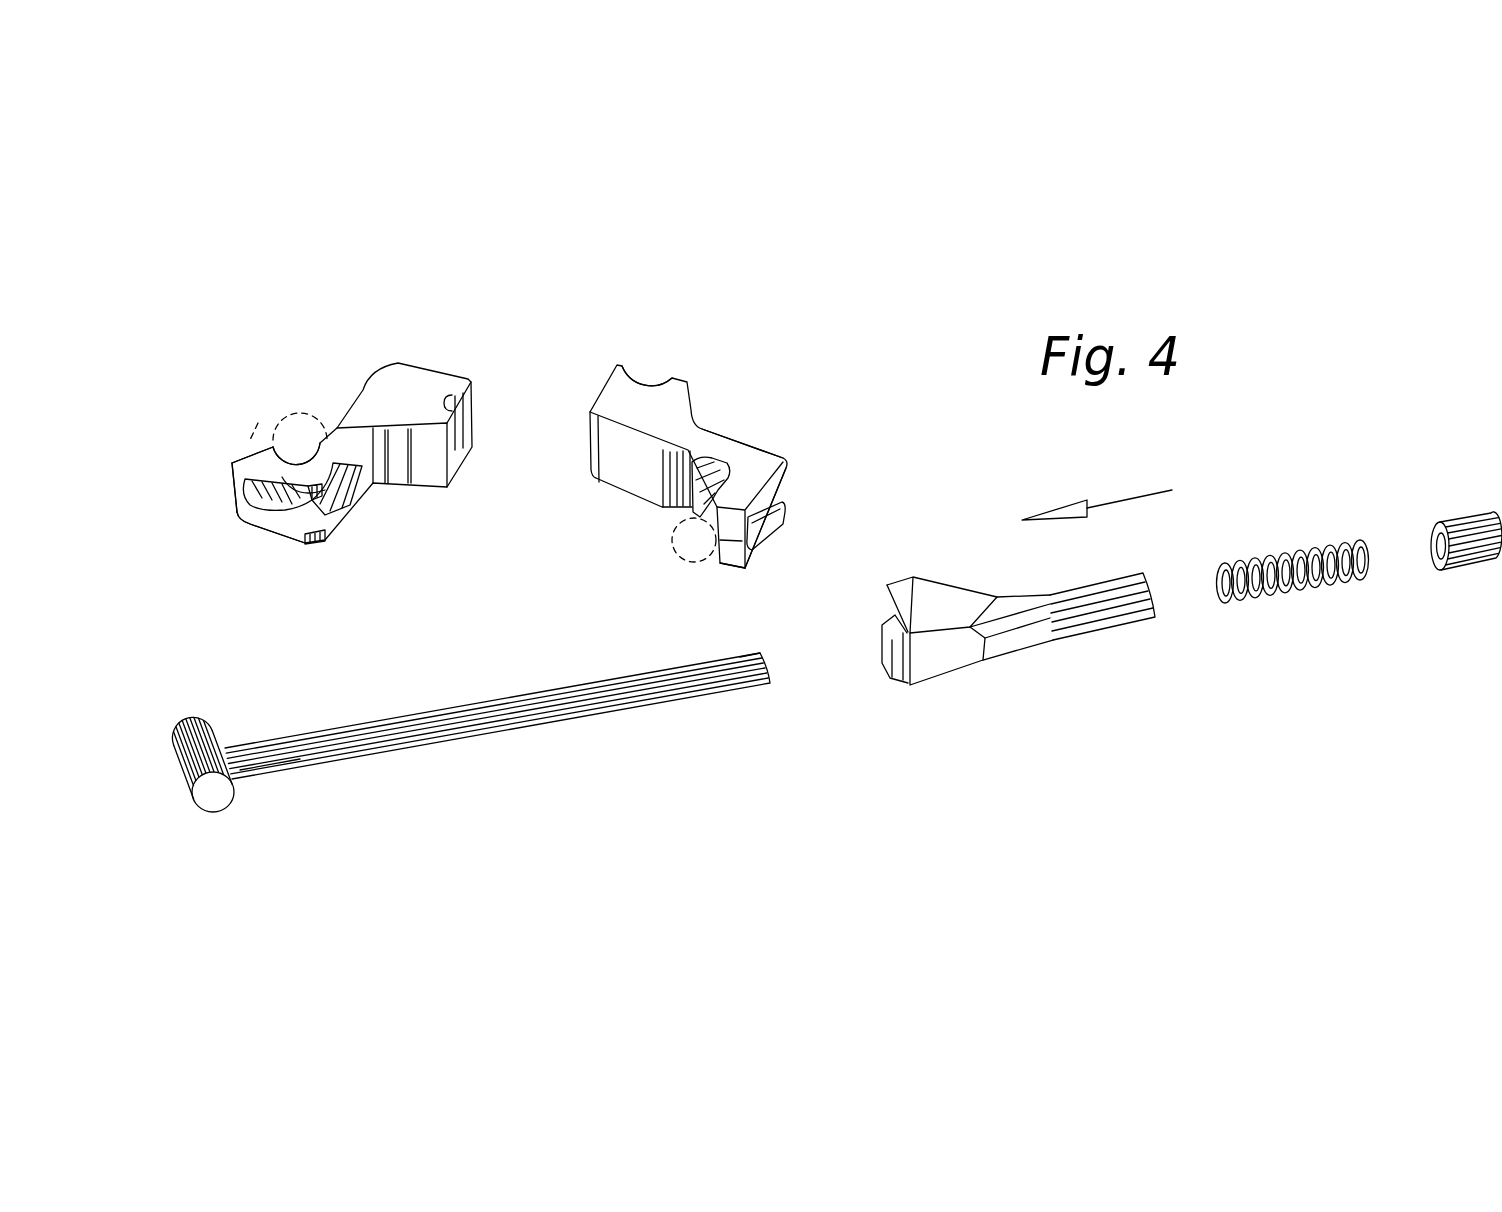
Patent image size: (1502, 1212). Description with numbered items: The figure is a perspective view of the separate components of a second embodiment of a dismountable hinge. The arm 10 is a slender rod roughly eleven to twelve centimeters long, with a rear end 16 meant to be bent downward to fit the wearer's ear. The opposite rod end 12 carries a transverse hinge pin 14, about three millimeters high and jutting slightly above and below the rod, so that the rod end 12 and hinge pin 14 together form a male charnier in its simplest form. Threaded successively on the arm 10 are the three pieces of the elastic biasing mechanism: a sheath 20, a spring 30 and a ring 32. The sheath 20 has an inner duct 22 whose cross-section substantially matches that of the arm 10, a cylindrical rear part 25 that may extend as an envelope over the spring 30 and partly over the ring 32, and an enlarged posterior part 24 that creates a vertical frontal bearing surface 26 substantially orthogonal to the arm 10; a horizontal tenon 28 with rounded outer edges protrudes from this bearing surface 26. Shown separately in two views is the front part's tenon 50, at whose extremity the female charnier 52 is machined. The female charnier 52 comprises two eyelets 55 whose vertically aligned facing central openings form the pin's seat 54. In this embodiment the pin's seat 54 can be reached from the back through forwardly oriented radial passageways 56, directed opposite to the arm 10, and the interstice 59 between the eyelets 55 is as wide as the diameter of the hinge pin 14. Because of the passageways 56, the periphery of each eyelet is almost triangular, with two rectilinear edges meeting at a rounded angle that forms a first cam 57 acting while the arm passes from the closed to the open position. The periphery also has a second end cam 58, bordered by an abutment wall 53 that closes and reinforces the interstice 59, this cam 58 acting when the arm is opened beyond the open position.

The arm 10 is at (498, 728).
The rod end 12 is at (282, 763).
The hinge pin 14 is at (230, 798).
The rear end 16 is at (747, 685).
The sheath 20 is at (966, 726).
The inner duct 22 is at (875, 651).
The posterior part 24 is at (952, 675).
The rear part 25 is at (1100, 613).
The frontal bearing surface 26 is at (908, 688).
The horizontal tenon 28 is at (892, 675).
The spring 30 is at (1258, 605).
The ring 32 is at (1453, 570).
The front part's tenon 50 is at (410, 390).
The female charnier 52 is at (242, 542).
The abutment wall 53 is at (230, 498).
The pin's seat 54 is at (312, 443).
The eyelets 55 is at (290, 533).
The radial passageways 56 is at (258, 420).
The first cam 57 is at (310, 553).
The second end cam 58 is at (235, 465).
The interstice 59 is at (320, 513).